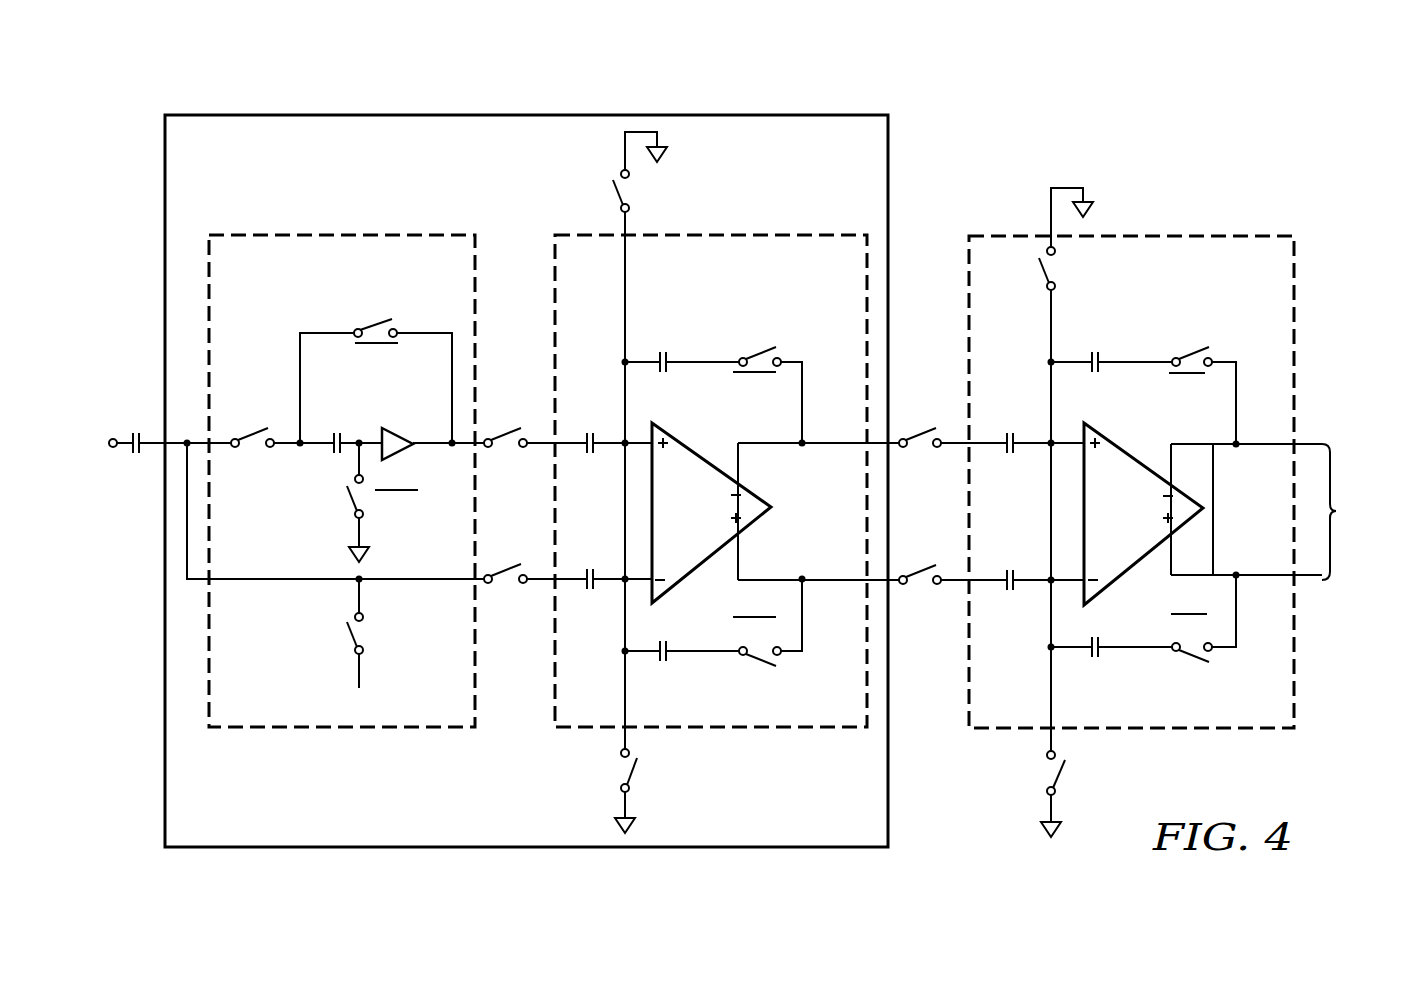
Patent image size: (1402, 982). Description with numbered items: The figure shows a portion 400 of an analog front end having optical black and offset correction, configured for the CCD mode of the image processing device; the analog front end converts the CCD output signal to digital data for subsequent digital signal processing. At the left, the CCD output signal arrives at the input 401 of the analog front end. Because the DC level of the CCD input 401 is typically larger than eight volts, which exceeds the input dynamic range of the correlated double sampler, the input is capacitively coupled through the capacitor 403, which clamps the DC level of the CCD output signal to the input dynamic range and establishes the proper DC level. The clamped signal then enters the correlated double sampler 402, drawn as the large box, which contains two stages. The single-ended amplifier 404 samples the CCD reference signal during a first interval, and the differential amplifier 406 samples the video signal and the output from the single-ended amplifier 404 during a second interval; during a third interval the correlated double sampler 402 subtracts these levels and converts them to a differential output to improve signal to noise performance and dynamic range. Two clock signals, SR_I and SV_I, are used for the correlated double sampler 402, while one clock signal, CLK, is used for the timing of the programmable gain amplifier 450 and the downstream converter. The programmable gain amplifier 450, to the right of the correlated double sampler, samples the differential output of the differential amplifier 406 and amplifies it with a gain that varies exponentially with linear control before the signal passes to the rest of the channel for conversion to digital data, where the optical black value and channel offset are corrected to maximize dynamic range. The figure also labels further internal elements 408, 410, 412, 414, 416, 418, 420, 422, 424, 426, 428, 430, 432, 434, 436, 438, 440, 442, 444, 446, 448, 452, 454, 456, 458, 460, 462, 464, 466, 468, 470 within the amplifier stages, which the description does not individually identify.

The portion of an analog front end 400 is at (949, 108).
The input 401 is at (113, 437).
The correlated double sampler 402 is at (417, 163).
The capacitor 403 is at (137, 456).
The single-ended amplifier 404 is at (330, 235).
The differential amplifier 406 is at (760, 235).
The SR_I input switch 408 is at (248, 433).
The sampling capacitor 410 is at (336, 430).
The buffer amplifier 412 is at (407, 431).
The feedback reset switch (SR_I bar) 414 is at (380, 330).
The ground reset switch (SR_I bar) 416 is at (350, 499).
The clamp switch 418 is at (350, 634).
The positive input capacitor 420 is at (589, 430).
The negative input capacitor 422 is at (590, 594).
The positive feedback capacitor 424 is at (658, 350).
The positive feedback switch (SV_I bar) 426 is at (761, 350).
The differential amplifier 428 is at (652, 506).
The positive output node CDSOU1P 430 is at (806, 439).
The negative output node CDSOU1M 432 is at (807, 585).
The negative feedback switch (SV_I bar) 434 is at (758, 665).
The negative feedback capacitor 436 is at (658, 664).
The lower ground switch SV_I 438 is at (634, 773).
The negative path input switch SV_I 440 is at (510, 569).
The positive path input switch SV_I 442 is at (510, 433).
The upper ground switch SV_I 444 is at (613, 191).
The positive path CLK switch 446 is at (922, 434).
The negative path CLK switch 448 is at (922, 570).
The programmable gain amplifier 450 is at (1172, 236).
The upper ground CLK switch 452 is at (1042, 266).
The positive input capacitor 454 is at (1009, 430).
The negative input capacitor 456 is at (1011, 594).
The positive feedback capacitor 458 is at (1097, 350).
The positive feedback switch (CLK bar) 460 is at (1193, 350).
The positive output node 462 is at (1242, 440).
The negative output node 464 is at (1242, 582).
The negative feedback switch (CLK bar) 466 is at (1193, 661).
The negative feedback capacitor 468 is at (1093, 661).
The lower ground CLK switch 470 is at (1064, 772).